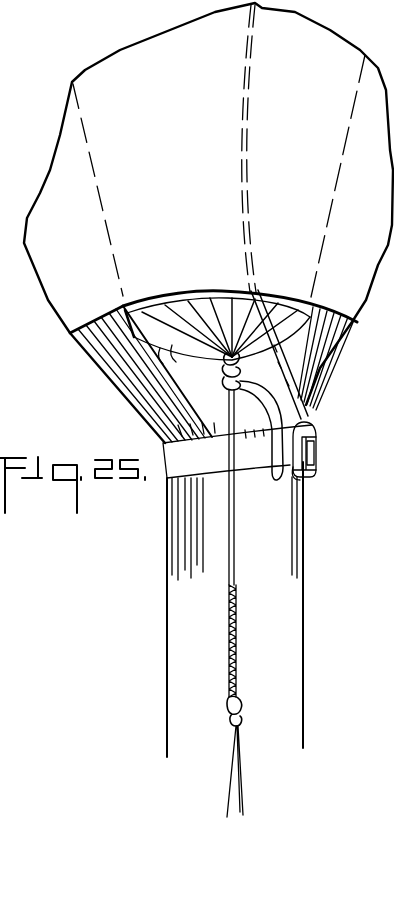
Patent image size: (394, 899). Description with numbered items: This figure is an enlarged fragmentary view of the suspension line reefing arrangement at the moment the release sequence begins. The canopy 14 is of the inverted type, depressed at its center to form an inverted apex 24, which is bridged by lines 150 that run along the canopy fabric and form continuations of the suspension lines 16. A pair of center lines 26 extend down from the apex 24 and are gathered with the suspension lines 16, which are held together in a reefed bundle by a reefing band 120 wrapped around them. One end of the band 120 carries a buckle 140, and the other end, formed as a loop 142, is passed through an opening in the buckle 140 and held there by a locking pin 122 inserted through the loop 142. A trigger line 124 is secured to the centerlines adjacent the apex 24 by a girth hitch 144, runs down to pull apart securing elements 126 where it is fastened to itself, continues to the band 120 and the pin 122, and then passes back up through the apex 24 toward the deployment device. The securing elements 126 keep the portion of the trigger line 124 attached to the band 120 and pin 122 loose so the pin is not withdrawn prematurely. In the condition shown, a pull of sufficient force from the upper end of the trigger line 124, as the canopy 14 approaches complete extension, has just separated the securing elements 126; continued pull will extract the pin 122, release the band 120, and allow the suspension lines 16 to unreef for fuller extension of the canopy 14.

The canopy 14 is at (60, 312).
The suspension lines 16 is at (118, 393).
The inverted apex 24 is at (197, 300).
The center lines 26 is at (232, 540).
The reefing band 120 is at (166, 482).
The locking pin 122 is at (318, 424).
The trigger line 124 is at (290, 365).
The pull apart securing elements 126 is at (276, 457).
The buckle 140 is at (291, 485).
The loop 142 is at (318, 458).
The girth hitch 144 is at (226, 385).
The lines 150 is at (195, 345).